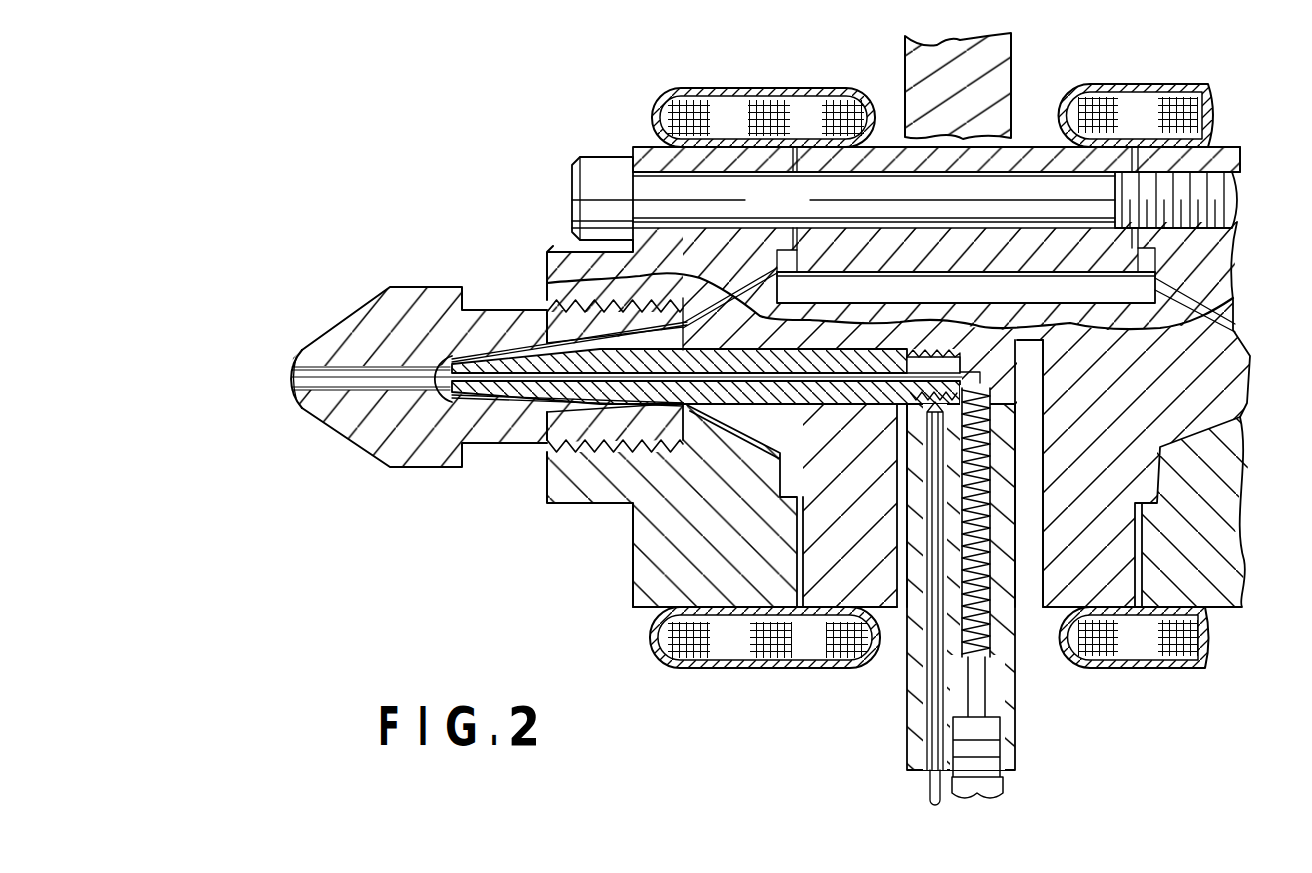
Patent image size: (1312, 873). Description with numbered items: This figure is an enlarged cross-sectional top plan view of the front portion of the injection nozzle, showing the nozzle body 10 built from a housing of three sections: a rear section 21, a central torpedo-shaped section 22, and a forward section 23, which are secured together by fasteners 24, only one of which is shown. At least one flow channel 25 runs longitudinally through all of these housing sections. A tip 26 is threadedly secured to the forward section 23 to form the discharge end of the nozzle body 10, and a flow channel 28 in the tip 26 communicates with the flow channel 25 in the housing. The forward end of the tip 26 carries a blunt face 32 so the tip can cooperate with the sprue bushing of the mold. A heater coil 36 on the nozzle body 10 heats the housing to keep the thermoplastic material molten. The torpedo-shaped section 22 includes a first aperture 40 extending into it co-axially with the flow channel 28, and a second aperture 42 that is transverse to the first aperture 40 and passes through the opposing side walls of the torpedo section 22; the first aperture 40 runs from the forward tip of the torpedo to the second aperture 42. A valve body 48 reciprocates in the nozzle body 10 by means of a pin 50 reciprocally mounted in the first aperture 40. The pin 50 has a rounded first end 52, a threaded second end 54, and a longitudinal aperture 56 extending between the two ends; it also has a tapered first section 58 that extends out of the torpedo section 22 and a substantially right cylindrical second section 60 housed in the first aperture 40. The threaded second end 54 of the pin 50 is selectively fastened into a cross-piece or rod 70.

The nozzle body 10 is at (540, 452).
The rear section 21 is at (1207, 512).
The central torpedo-shaped section 22 is at (1215, 390).
The forward section 23 is at (650, 553).
The fasteners 24 is at (672, 188).
The flow channel 25 is at (1175, 300).
The tip 26 is at (385, 280).
The flow channel 28 is at (333, 378).
The blunt face 32 is at (298, 357).
The heater coil 36 is at (715, 108).
The first aperture 40 is at (797, 395).
The second aperture 42 is at (1033, 595).
The valve body 48 is at (900, 340).
The pin 50 is at (478, 352).
The rounded first end 52 is at (386, 443).
The threaded second end 54 is at (935, 350).
The longitudinal aperture 56 is at (518, 372).
The tapered first section 58 is at (612, 395).
The right cylindrical second section 60 is at (848, 395).
The cross-piece or rod 70 is at (900, 690).